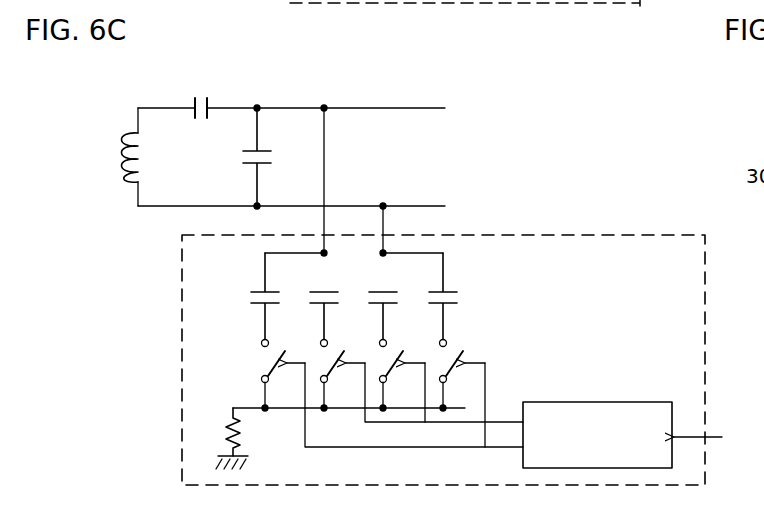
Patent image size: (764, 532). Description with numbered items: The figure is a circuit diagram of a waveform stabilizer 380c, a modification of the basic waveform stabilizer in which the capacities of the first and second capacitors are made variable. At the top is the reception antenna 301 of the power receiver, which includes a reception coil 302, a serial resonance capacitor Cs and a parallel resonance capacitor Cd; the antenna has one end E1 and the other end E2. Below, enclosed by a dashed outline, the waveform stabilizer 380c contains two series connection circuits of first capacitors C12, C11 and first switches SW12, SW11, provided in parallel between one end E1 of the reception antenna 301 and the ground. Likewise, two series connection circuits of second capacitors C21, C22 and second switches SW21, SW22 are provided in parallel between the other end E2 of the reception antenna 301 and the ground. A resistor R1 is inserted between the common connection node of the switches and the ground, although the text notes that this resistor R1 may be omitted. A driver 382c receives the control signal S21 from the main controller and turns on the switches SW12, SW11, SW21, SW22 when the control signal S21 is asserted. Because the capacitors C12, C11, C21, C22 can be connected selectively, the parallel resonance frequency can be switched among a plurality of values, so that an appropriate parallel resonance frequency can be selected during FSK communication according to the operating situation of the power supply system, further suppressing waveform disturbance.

The reception antenna 301 is at (248, 158).
The reception coil 302 is at (118, 162).
The waveform stabilizer 380c is at (645, 233).
The driver 382c is at (665, 388).
The control signal S21 is at (719, 438).
The serial resonance capacitor Cs is at (199, 96).
The parallel resonance capacitor Cd is at (248, 168).
The one end of the reception antenna E1 is at (312, 104).
The other end of the reception antenna E2 is at (352, 202).
The first capacitor C12 is at (265, 292).
The first capacitor C11 is at (324, 292).
The second capacitor C21 is at (383, 292).
The second capacitor C22 is at (443, 292).
The first switch SW12 is at (285, 333).
The first switch SW11 is at (344, 333).
The second switch SW21 is at (403, 333).
The second switch SW22 is at (463, 333).
The resistor R1 is at (219, 438).